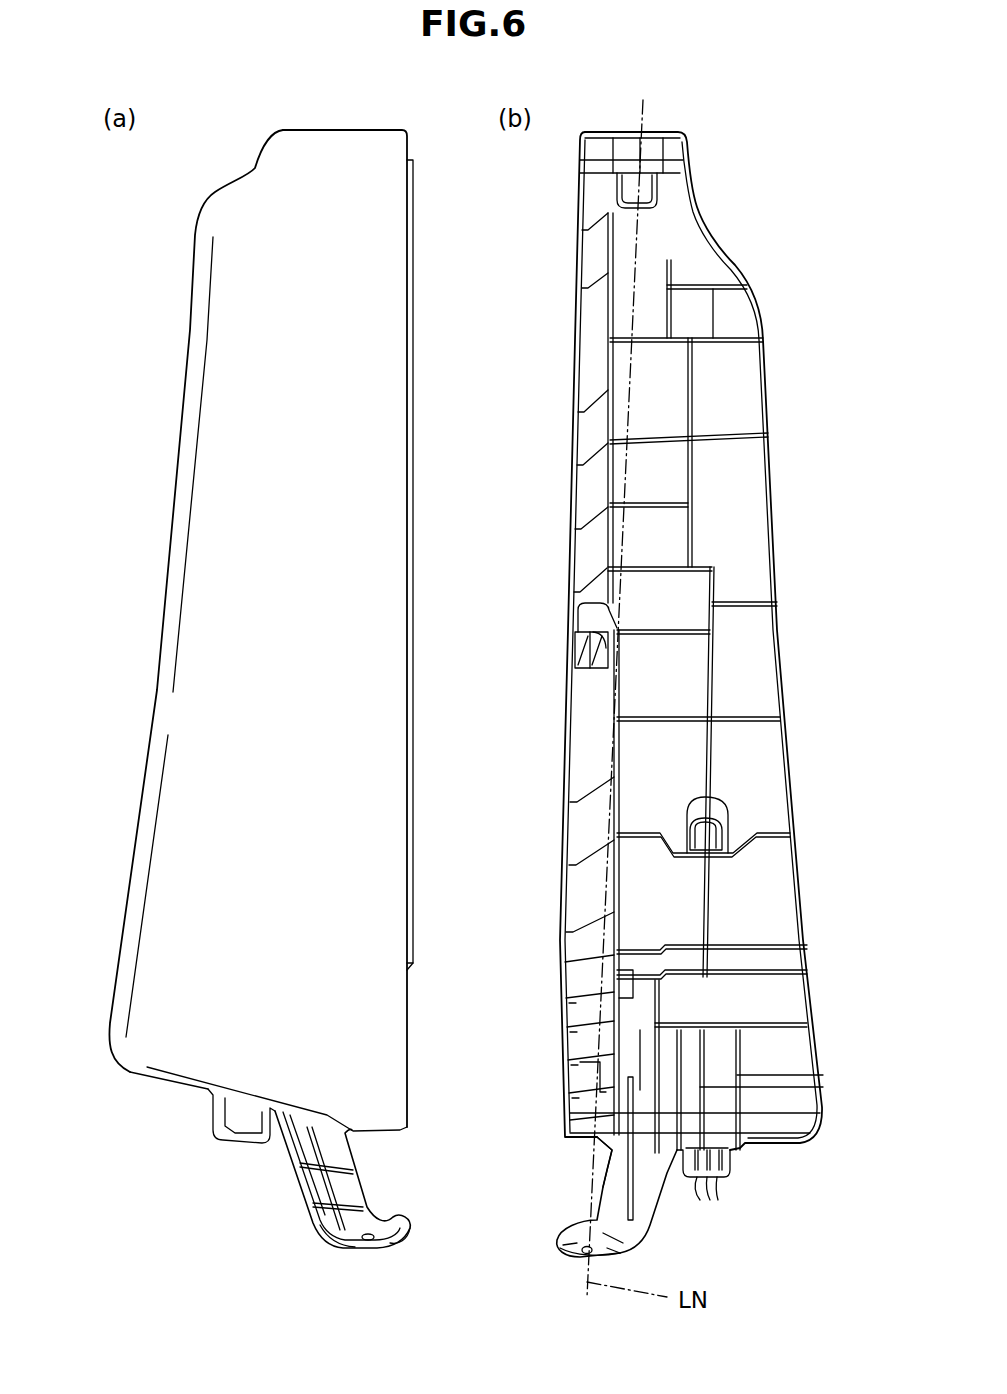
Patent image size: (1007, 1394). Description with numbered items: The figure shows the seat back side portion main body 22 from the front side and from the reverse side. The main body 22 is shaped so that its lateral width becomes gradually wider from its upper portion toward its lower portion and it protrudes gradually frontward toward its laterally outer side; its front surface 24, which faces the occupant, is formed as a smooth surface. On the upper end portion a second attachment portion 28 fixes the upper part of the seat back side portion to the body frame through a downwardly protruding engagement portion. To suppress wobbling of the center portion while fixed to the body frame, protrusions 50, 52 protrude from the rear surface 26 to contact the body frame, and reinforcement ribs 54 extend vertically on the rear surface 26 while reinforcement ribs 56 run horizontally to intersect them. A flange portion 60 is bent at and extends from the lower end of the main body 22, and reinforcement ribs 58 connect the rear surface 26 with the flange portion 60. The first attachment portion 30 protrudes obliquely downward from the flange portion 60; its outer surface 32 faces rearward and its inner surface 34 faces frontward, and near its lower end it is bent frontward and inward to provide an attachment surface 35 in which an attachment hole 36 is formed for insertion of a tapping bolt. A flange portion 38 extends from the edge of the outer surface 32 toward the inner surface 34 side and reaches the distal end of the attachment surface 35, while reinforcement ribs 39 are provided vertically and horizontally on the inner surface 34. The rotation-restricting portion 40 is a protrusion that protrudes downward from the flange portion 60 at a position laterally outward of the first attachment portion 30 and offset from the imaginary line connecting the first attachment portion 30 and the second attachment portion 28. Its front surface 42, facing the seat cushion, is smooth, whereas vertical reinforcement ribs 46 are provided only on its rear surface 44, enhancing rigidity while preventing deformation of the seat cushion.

The seat back side portion main body 22 is at (368, 121).
The front surface 24 is at (245, 372).
The rear surface 26 is at (733, 522).
The second attachment portion 28 is at (663, 187).
The first attachment portion 30 is at (290, 1188).
The outer surface 32 is at (648, 1190).
The inner surface 34 is at (350, 1195).
The attachment surface 35 is at (338, 1250).
The attachment hole 36 is at (366, 1243).
The flange portion 38 is at (410, 1245).
The reinforcement ribs 39 is at (330, 1153).
The rotation-restricting portion 40 is at (205, 1125).
The front surface 42 is at (245, 1117).
The rear surface 44 is at (727, 1158).
The reinforcement ribs 46 is at (720, 1201).
The protrusion 50 is at (590, 622).
The protrusion 52 is at (715, 818).
The reinforcement ribs 54 is at (620, 495).
The reinforcement ribs 56 is at (663, 432).
The reinforcement ribs 58 is at (647, 1067).
The flange portion 60 is at (330, 1117).